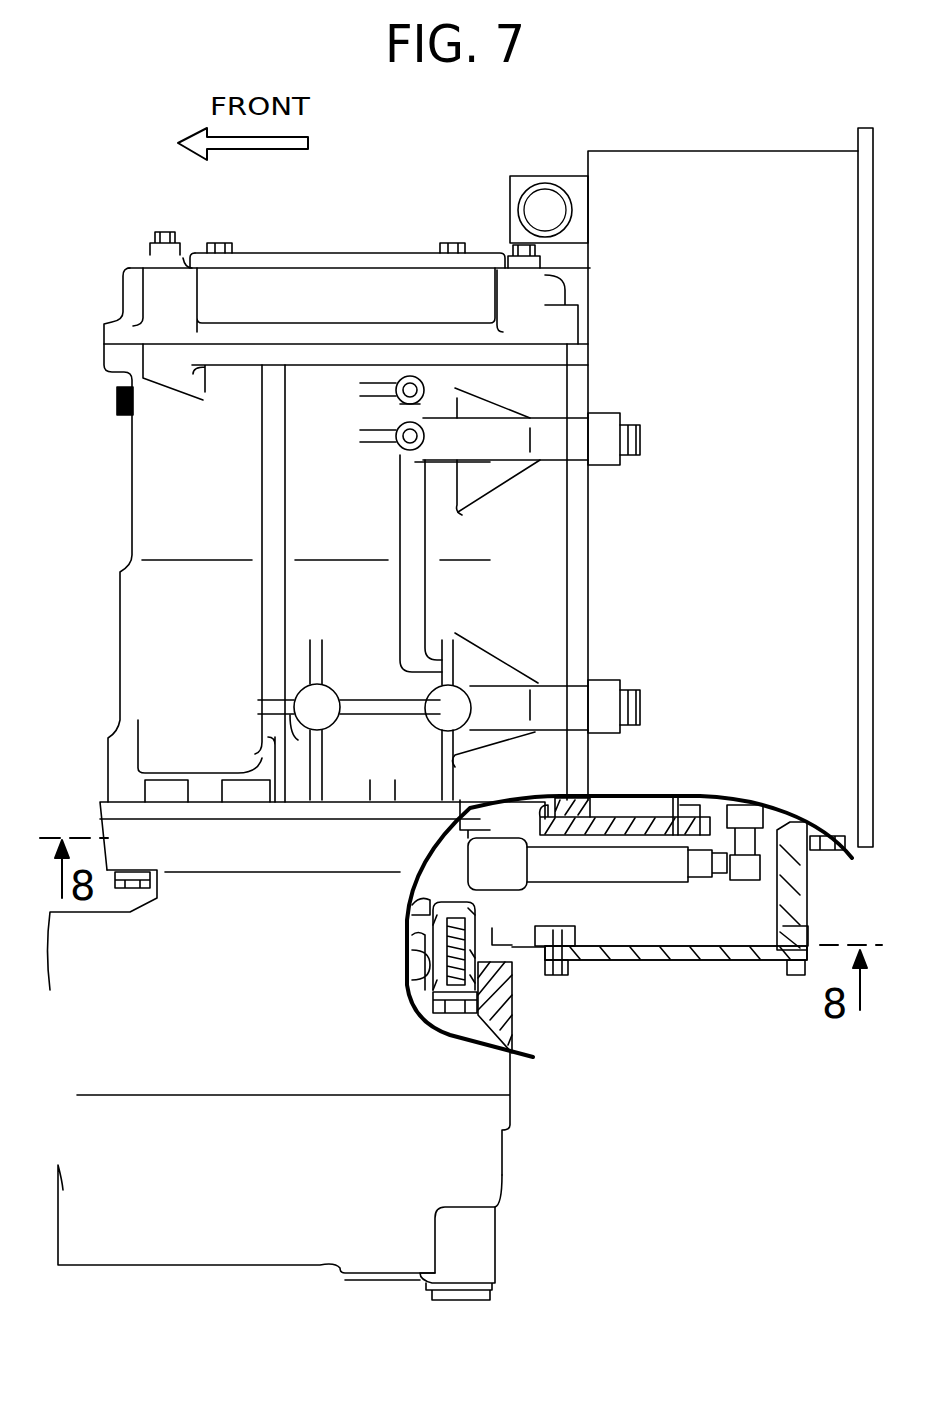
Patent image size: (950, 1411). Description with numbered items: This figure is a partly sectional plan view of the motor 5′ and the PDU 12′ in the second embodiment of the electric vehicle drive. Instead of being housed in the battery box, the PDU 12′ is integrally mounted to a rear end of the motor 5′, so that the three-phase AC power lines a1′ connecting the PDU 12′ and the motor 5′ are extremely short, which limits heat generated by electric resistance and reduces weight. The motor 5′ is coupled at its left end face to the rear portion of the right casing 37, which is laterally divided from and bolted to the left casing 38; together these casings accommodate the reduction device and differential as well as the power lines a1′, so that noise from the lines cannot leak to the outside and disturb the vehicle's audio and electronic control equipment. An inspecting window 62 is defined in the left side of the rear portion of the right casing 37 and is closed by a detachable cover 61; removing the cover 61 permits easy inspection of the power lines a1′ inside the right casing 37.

The motor 5′ is at (319, 243).
The PDU 12′ is at (695, 135).
The three-phase AC power line a1′ is at (590, 870).
The inspecting window 62 is at (592, 958).
The cover 61 is at (672, 960).
The right casing 37 is at (465, 1068).
The left casing 38 is at (478, 1172).